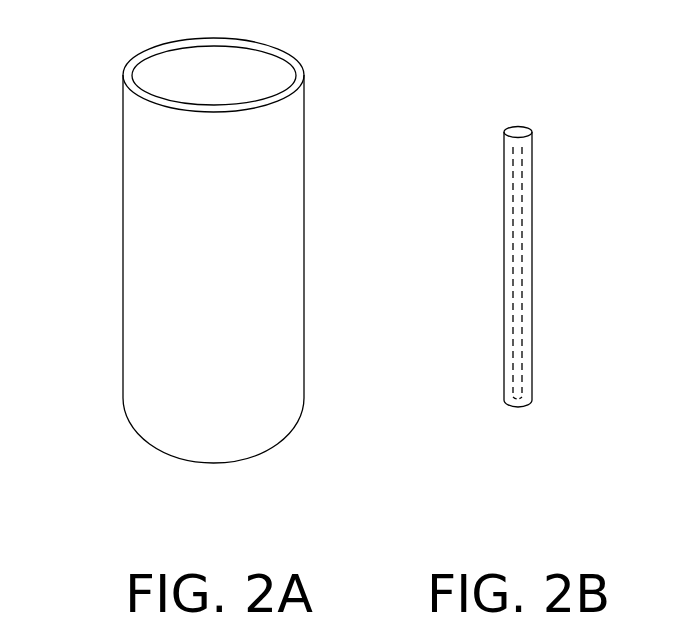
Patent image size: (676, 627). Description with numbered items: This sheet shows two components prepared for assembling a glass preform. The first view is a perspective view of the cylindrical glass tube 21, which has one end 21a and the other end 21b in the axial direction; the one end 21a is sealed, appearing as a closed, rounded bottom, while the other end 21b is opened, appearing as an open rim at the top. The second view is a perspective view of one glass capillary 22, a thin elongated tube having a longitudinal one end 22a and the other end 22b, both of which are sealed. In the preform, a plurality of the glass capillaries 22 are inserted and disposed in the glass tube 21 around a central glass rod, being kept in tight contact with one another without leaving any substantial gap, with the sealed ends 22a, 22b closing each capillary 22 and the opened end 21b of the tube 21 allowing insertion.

In FIG. 2A, the cylindrical glass tube 21 is at (215, 270).
In FIG. 2A, the one end of glass tube 21a is at (267, 425).
In FIG. 2A, the other end of glass tube 21b is at (301, 64).
In FIG. 2B, the glass capillary 22 is at (568, 289).
In FIG. 2B, the longitudinal one end of glass capillary 22a is at (518, 408).
In FIG. 2B, the other end of glass capillary 22b is at (519, 128).